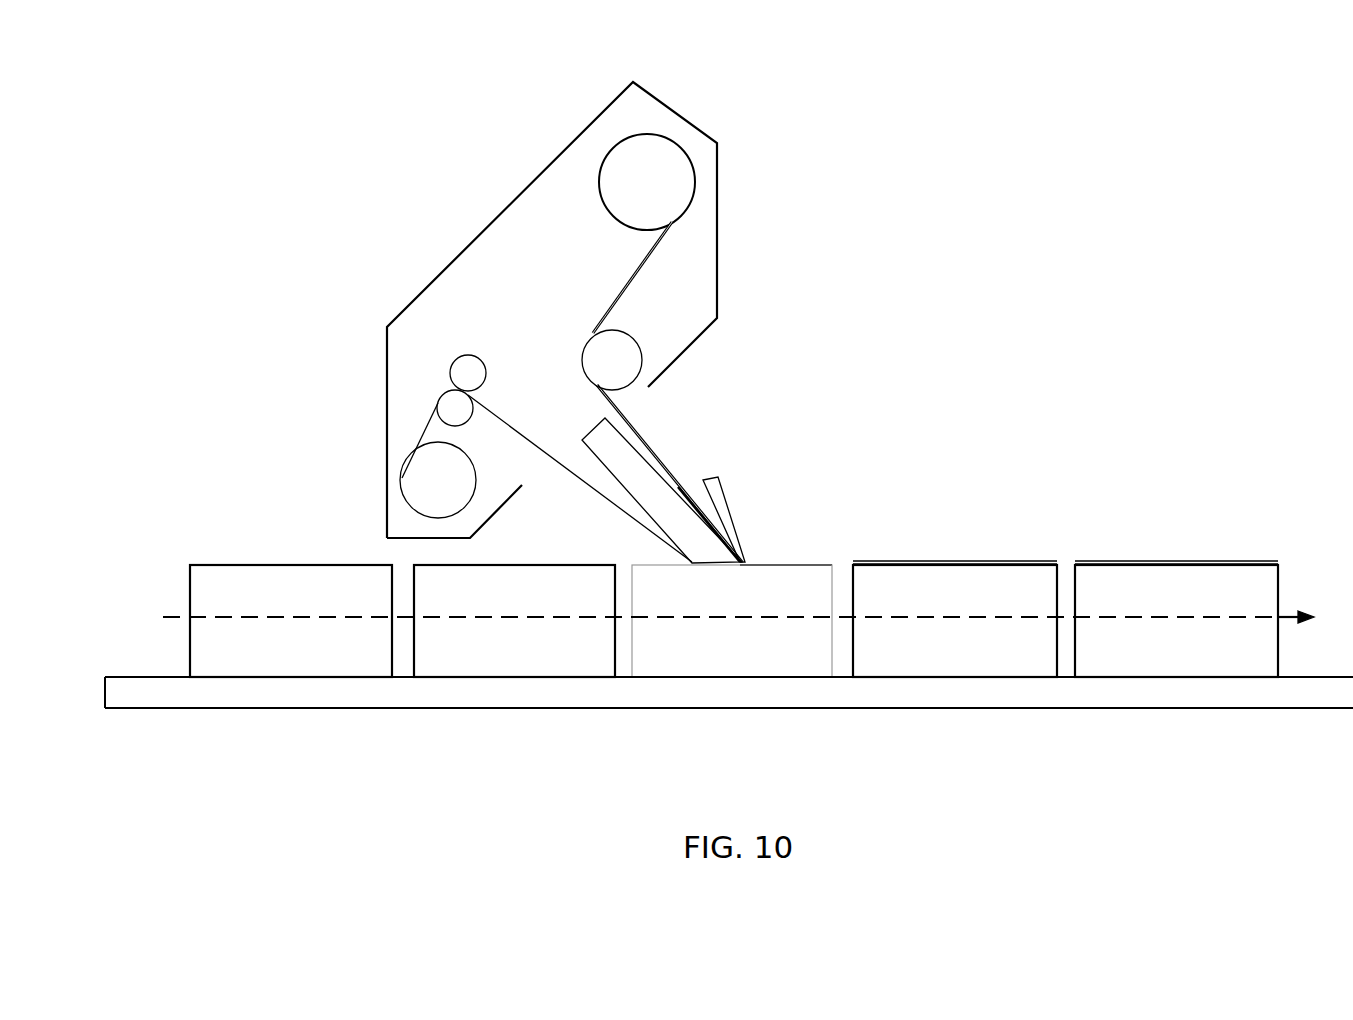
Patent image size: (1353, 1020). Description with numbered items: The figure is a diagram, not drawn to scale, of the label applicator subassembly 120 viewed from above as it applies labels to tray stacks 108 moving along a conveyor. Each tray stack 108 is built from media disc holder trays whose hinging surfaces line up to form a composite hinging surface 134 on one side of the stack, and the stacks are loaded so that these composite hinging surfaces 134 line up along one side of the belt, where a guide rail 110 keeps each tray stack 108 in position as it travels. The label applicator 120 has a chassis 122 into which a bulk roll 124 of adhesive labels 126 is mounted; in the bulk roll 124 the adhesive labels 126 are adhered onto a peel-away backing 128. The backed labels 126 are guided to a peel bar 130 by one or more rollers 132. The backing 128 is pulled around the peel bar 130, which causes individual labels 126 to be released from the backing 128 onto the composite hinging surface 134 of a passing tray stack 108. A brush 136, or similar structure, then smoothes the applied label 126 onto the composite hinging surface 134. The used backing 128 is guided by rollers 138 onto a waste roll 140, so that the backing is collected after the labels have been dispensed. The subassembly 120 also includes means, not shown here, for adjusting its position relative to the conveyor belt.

The tray stack 108 is at (196, 587).
The guide rail 110 is at (300, 693).
The label applicator subassembly 120 is at (716, 52).
The chassis 122 is at (717, 177).
The bulk roll 124 is at (602, 204).
The adhesive label 126 is at (650, 262).
The peel-away backing 128 is at (620, 281).
The peel bar 130 is at (597, 434).
The roller 132 is at (589, 350).
The composite hinging surface 134 is at (246, 564).
The brush 136 is at (720, 485).
The rollers 138 is at (466, 360).
The waste roll 140 is at (464, 470).